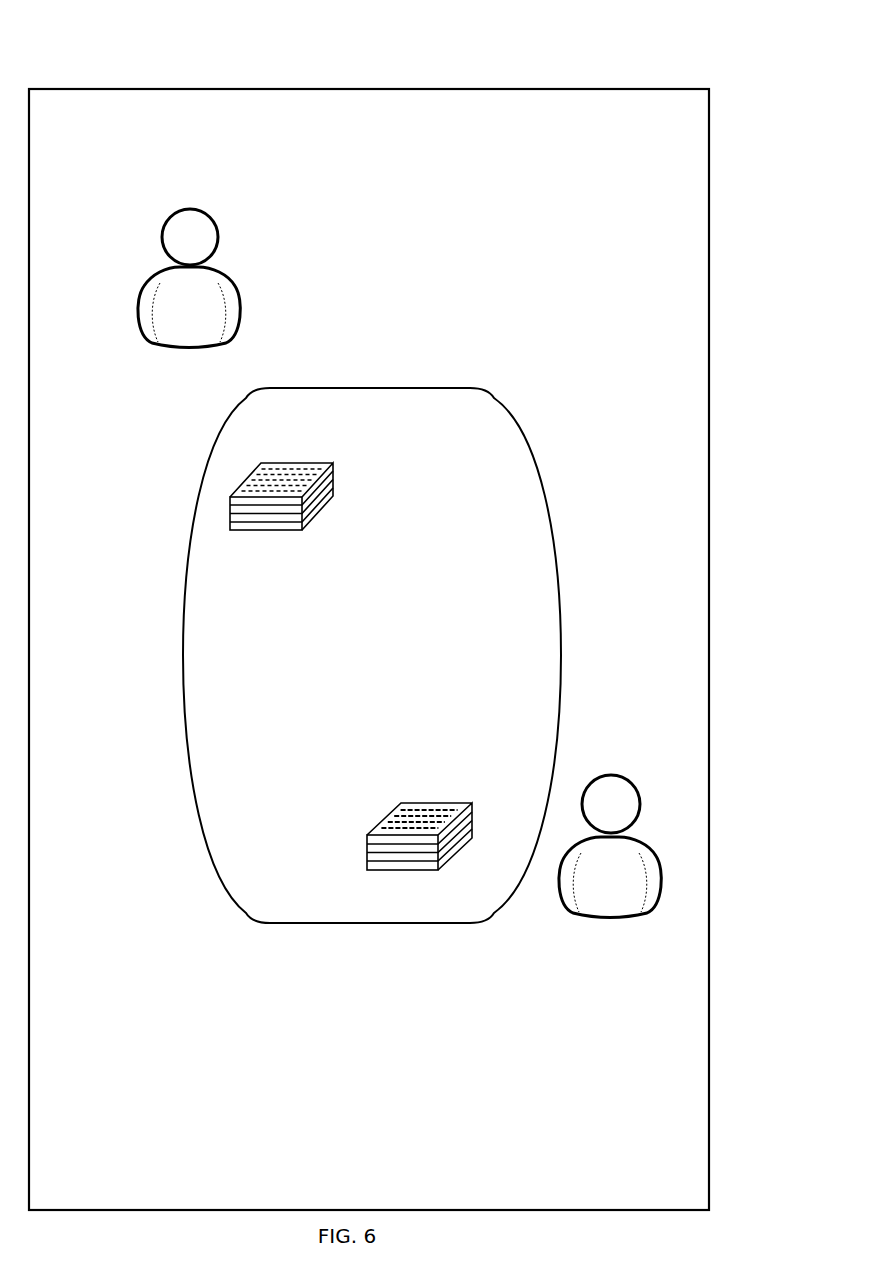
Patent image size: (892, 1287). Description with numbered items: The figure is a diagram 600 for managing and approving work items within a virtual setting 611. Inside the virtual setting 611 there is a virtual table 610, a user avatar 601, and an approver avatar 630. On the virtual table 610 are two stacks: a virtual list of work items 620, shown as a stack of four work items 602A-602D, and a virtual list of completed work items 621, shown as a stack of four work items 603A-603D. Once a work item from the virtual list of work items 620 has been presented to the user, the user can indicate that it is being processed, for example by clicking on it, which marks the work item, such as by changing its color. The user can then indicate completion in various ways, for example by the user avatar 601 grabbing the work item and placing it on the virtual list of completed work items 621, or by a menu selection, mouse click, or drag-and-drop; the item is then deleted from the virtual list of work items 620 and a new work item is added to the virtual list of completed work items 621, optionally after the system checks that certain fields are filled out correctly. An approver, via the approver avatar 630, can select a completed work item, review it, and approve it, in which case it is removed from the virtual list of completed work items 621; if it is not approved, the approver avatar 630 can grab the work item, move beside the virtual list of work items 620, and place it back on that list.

The diagram 600 is at (374, 62).
The virtual setting 611 is at (540, 89).
The user avatar 601 is at (190, 207).
The work items 602A-602D is at (278, 470).
The virtual list of work items 620 is at (319, 481).
The virtual table 610 is at (470, 388).
The work items 603A-603D is at (410, 810).
The virtual list of completed work items 621 is at (455, 821).
The approver avatar 630 is at (612, 775).